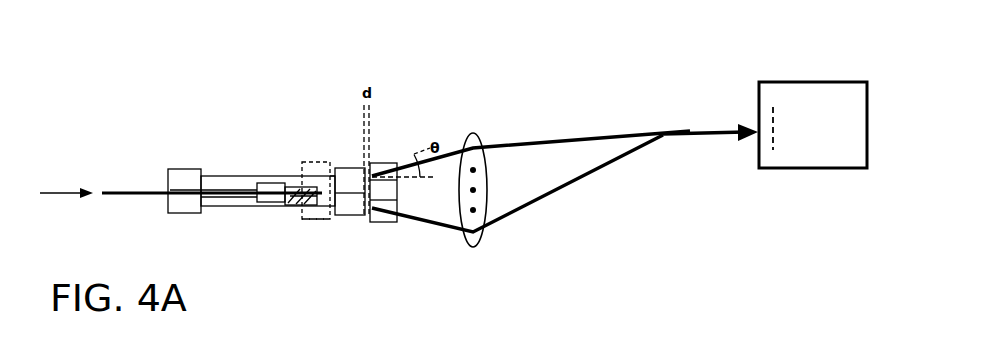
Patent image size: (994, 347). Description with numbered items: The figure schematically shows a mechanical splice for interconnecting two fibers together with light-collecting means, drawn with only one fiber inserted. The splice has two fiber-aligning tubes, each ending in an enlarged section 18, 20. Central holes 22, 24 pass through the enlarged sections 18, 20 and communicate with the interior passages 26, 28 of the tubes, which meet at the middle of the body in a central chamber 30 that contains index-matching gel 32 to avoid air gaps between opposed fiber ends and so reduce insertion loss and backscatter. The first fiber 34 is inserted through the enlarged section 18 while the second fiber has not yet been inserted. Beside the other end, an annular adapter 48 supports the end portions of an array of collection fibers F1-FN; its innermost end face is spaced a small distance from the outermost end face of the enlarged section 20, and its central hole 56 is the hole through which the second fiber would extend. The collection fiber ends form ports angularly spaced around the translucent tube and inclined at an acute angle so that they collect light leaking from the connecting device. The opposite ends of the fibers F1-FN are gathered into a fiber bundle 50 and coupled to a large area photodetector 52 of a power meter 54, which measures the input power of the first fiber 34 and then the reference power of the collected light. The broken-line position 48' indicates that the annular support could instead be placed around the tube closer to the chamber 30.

The enlarged section 18 is at (180, 175).
The enlarged section 20 is at (347, 208).
The central hole 22 is at (187, 201).
The central hole 24 is at (333, 182).
The interior passage 26 is at (240, 187).
The interior passage 28 is at (308, 182).
The central chamber 30 is at (272, 185).
The index-matching gel 32 is at (295, 190).
The first fiber 34 is at (147, 194).
The annular adapter 48 is at (404, 156).
The annular support in alternative position 48' is at (331, 263).
The fiber bundle 50 is at (695, 130).
The photodetector 52 is at (772, 107).
The power meter 54 is at (777, 170).
The central hole 56 is at (392, 193).
The array of optical fibers F1-FN is at (473, 247).